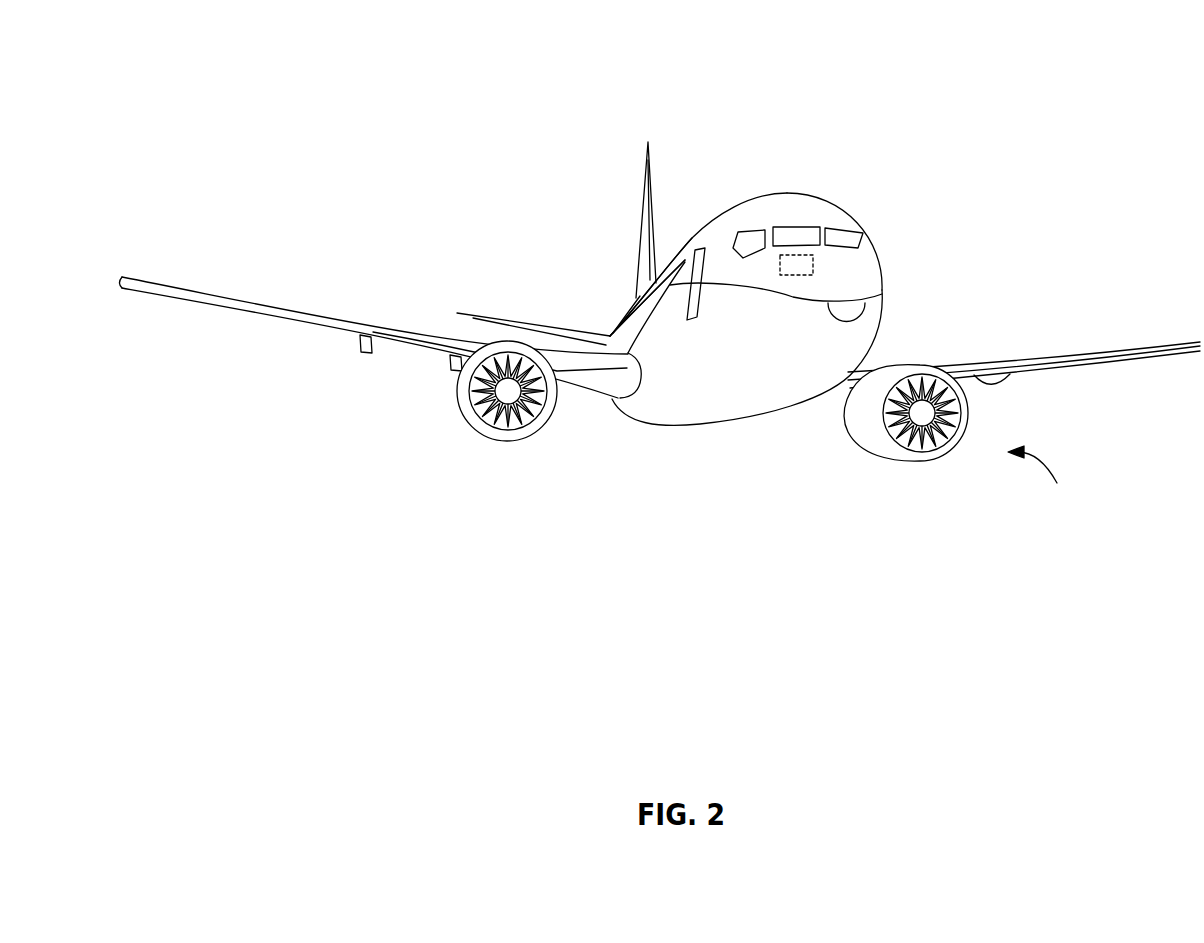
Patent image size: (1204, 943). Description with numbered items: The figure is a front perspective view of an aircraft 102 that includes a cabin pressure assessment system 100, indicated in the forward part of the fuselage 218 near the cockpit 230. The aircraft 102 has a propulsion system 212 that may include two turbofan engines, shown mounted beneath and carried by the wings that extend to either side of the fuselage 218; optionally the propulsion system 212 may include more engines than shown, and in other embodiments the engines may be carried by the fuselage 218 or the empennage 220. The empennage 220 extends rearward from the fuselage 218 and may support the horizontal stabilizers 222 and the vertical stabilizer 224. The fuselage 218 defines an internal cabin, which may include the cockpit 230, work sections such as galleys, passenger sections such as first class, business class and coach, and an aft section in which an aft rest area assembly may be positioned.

The cabin pressure assessment system 100 is at (817, 268).
The aircraft 102 is at (399, 90).
The propulsion system 212 is at (1039, 482).
The fuselage 218 is at (880, 265).
The empennage 220 is at (636, 298).
The horizontal stabilizer 222 is at (497, 316).
The vertical stabilizer 224 is at (645, 185).
The cockpit 230 is at (800, 237).